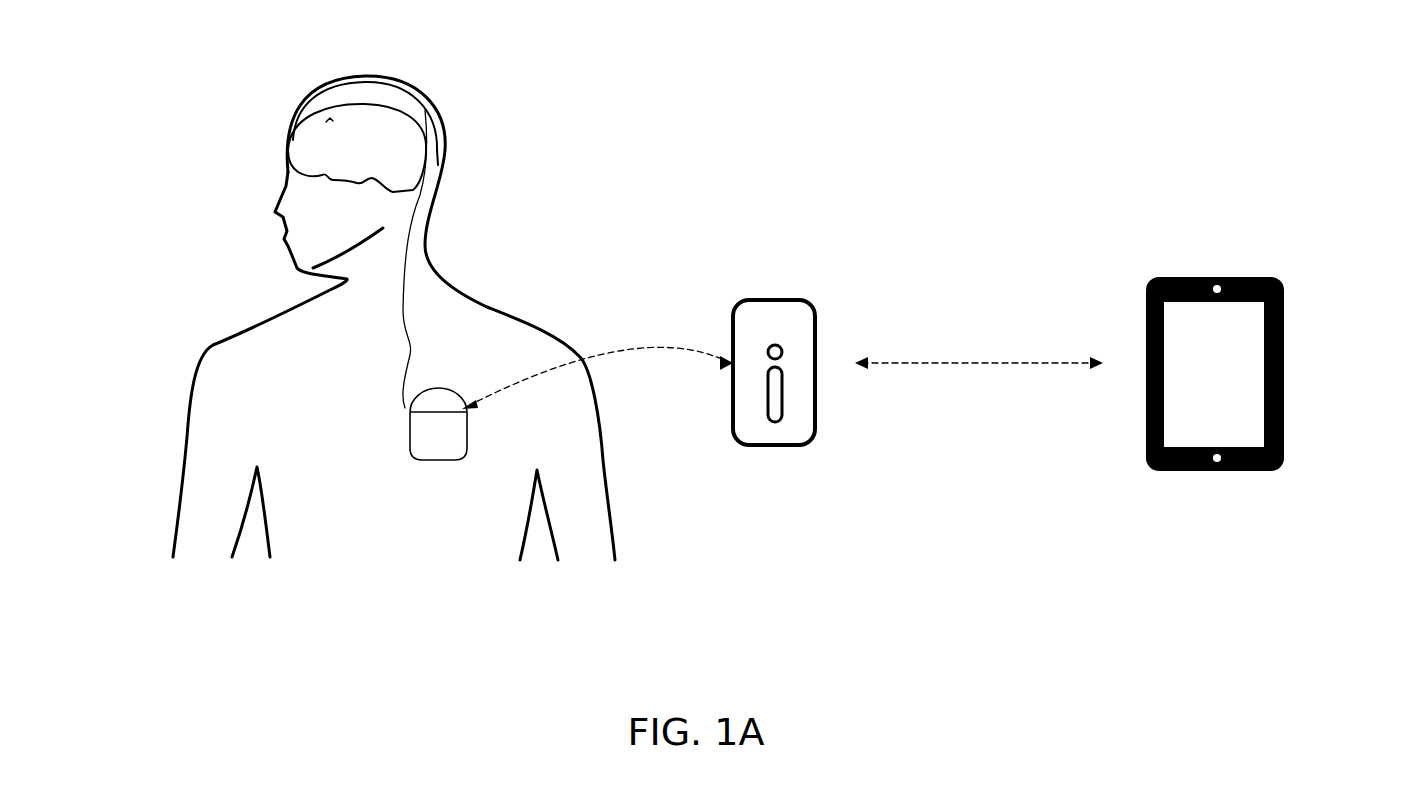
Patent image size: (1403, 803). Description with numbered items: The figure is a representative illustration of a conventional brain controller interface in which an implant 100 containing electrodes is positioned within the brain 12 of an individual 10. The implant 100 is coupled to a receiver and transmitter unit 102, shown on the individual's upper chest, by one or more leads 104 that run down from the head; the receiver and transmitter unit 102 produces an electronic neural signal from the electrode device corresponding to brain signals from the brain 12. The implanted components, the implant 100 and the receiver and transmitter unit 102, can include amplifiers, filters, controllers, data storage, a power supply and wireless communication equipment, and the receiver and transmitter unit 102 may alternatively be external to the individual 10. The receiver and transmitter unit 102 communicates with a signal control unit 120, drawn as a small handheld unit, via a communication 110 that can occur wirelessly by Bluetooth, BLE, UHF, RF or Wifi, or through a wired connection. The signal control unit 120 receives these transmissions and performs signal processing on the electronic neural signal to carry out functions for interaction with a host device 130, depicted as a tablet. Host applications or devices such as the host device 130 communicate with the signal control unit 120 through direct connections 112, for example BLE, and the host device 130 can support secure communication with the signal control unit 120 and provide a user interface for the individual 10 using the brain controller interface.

The individual 10 is at (206, 351).
The brain 12 is at (355, 93).
The implant 100 is at (331, 118).
The receiver and transmitter unit 102 is at (453, 450).
The leads 104 is at (430, 213).
The communication 110 is at (603, 348).
The direct connections 112 is at (962, 362).
The signal control unit 120 is at (795, 325).
The host device 130 is at (1253, 278).